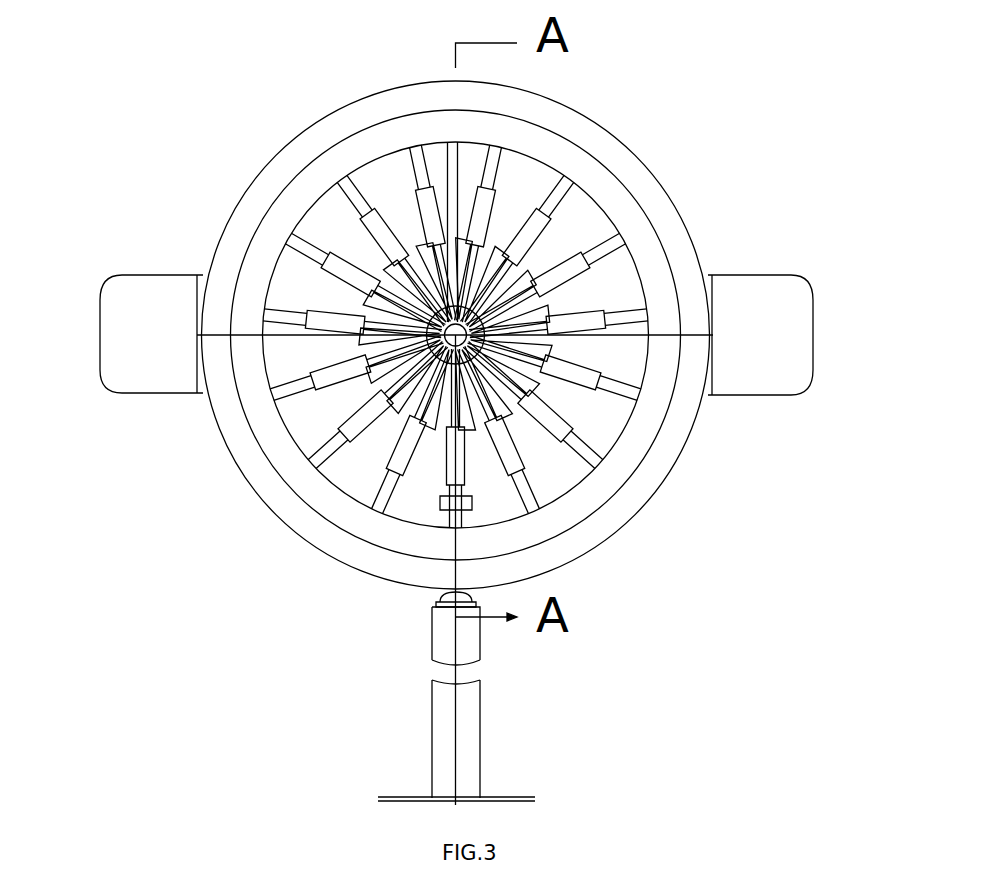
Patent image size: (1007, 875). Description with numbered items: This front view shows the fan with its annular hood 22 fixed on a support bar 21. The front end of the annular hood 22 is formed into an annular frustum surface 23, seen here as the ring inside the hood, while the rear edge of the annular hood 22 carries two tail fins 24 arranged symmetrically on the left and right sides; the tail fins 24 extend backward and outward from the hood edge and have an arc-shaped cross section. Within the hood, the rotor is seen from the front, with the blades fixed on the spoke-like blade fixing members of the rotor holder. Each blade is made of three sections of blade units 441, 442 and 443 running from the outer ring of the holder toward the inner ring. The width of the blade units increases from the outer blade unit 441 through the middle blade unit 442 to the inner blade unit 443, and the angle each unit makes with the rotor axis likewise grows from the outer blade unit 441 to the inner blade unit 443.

The support bar 21 is at (472, 700).
The annular hood 22 is at (637, 503).
The annular frustum surface 23 is at (302, 185).
The tail fin 24 is at (145, 290).
The blade unit 441 is at (490, 170).
The blade unit 442 is at (495, 207).
The blade unit 443 is at (493, 253).